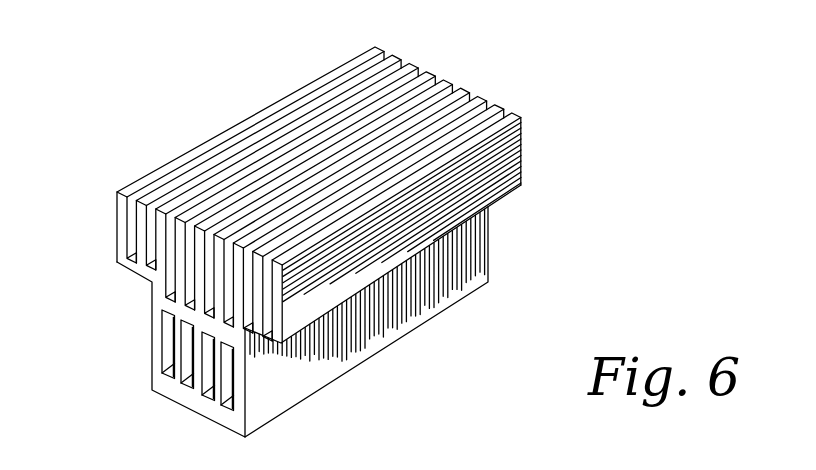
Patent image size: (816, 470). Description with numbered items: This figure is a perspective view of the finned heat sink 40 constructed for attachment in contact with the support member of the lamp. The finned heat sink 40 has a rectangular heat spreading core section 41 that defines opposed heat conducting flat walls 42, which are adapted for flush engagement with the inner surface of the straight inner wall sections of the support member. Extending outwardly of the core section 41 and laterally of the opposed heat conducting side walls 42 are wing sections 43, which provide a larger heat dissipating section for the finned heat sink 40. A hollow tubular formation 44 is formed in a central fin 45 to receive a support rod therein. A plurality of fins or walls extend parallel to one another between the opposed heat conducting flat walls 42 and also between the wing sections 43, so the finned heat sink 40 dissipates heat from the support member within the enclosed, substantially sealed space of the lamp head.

The finned heat sink 40 is at (143, 124).
The rectangular heat spreading core section 41 is at (128, 343).
The heat conducting flat walls 42 is at (150, 367).
The wing sections 43 is at (503, 145).
The hollow tubular formation 44 is at (333, 365).
The central fin 45 is at (273, 120).